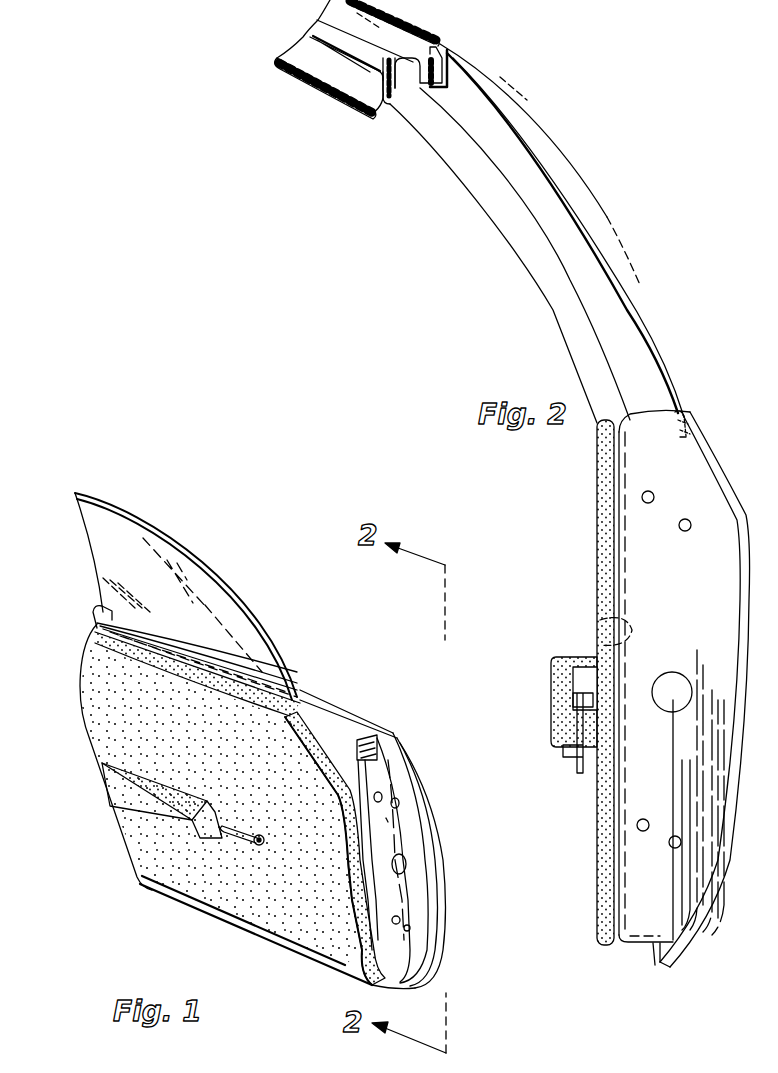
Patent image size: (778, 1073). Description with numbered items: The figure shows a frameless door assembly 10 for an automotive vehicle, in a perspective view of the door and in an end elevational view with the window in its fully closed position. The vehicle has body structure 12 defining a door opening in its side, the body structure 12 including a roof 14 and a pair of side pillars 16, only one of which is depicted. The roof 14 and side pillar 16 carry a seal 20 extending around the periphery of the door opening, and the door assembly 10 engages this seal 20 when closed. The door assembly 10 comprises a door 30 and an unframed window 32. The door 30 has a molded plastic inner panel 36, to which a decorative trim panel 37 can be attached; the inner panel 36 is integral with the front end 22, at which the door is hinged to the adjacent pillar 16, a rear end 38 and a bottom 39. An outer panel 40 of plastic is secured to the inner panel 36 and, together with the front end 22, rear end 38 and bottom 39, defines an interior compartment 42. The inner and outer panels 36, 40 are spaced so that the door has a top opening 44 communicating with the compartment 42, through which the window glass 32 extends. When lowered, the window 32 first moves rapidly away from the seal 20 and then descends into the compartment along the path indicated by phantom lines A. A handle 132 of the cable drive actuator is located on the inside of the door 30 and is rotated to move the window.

In FIG. 2, the door assembly 10 is at (717, 444).
In FIG. 1, the door assembly 10 is at (350, 700).
In FIG. 2, the body structure 12 is at (428, 143).
In FIG. 2, the roof 14 is at (305, 33).
In FIG. 2, the side pillar 16 is at (553, 311).
In FIG. 2, the seal 20 is at (447, 74).
In FIG. 2, the front end 22 is at (652, 908).
In FIG. 1, the front end 22 is at (395, 897).
In FIG. 2, the door 30 is at (642, 943).
In FIG. 1, the door 30 is at (214, 930).
In FIG. 2, the window 32 is at (589, 235).
In FIG. 1, the window 32 is at (172, 534).
In FIG. 2, the inner panel 36 is at (620, 470).
In FIG. 1, the inner panel 36 is at (345, 757).
In FIG. 2, the decorative trim panel 37 is at (603, 912).
In FIG. 1, the decorative trim panel 37 is at (158, 878).
In FIG. 1, the rear end 38 is at (80, 680).
In FIG. 2, the bottom 39 is at (652, 949).
In FIG. 1, the bottom 39 is at (325, 983).
In FIG. 2, the outer panel 40 is at (707, 903).
In FIG. 1, the outer panel 40 is at (436, 943).
In FIG. 2, the interior compartment 42 is at (600, 625).
In FIG. 1, the interior compartment 42 is at (405, 866).
In FIG. 2, the top opening 44 is at (680, 437).
In FIG. 1, the top opening 44 is at (310, 706).
In FIG. 2, the handle 132 is at (577, 778).
In FIG. 1, the handle 132 is at (230, 832).
In FIG. 2, the phantom lines A is at (587, 167).